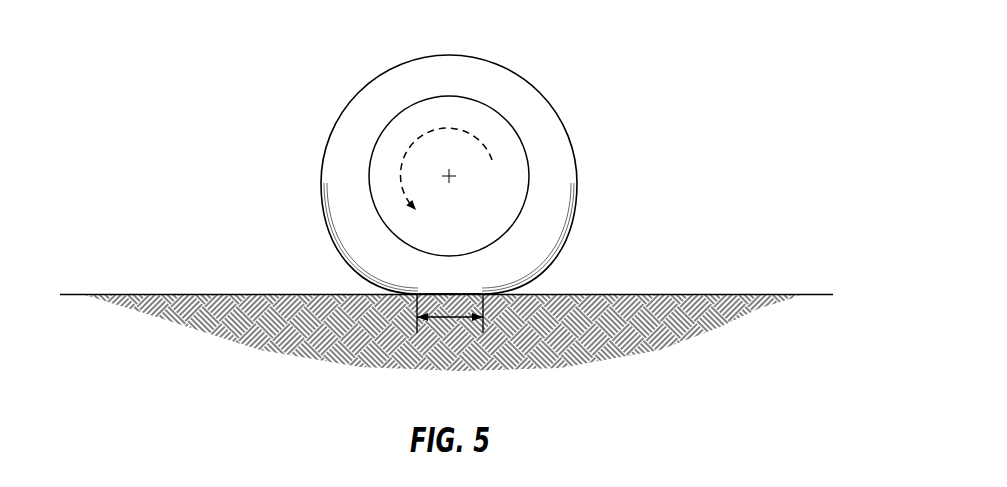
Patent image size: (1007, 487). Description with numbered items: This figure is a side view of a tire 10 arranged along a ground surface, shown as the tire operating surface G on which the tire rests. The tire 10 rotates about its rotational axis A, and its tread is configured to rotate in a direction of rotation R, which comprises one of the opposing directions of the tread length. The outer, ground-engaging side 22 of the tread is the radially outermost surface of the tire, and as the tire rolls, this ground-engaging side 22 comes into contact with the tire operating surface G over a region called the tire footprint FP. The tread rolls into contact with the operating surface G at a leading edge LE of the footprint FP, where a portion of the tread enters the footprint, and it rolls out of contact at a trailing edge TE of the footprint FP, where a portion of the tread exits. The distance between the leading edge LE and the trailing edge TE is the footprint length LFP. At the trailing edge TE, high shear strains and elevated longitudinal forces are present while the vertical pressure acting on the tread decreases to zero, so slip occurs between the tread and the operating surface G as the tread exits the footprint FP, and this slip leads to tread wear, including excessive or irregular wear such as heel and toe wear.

The tire 10 is at (499, 152).
The outer, ground-engaging side 22 is at (401, 66).
The direction of rotation R is at (472, 137).
The rotational axis A is at (451, 179).
The tire footprint FP is at (450, 293).
The tire operating surface G is at (627, 294).
The leading edge LE is at (412, 318).
The trailing edge TE is at (487, 318).
The footprint length LFP is at (450, 318).